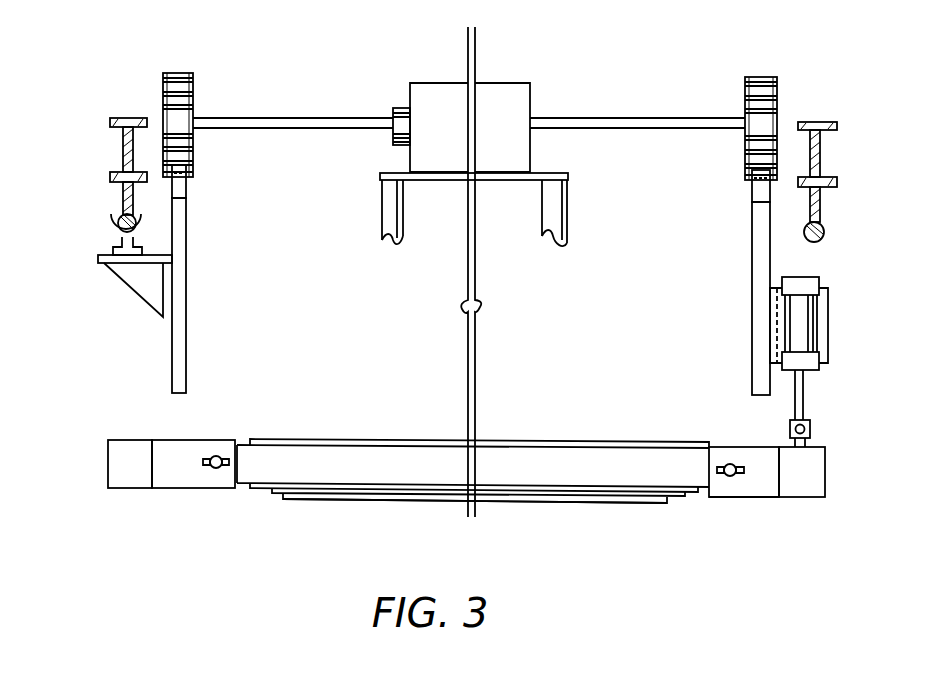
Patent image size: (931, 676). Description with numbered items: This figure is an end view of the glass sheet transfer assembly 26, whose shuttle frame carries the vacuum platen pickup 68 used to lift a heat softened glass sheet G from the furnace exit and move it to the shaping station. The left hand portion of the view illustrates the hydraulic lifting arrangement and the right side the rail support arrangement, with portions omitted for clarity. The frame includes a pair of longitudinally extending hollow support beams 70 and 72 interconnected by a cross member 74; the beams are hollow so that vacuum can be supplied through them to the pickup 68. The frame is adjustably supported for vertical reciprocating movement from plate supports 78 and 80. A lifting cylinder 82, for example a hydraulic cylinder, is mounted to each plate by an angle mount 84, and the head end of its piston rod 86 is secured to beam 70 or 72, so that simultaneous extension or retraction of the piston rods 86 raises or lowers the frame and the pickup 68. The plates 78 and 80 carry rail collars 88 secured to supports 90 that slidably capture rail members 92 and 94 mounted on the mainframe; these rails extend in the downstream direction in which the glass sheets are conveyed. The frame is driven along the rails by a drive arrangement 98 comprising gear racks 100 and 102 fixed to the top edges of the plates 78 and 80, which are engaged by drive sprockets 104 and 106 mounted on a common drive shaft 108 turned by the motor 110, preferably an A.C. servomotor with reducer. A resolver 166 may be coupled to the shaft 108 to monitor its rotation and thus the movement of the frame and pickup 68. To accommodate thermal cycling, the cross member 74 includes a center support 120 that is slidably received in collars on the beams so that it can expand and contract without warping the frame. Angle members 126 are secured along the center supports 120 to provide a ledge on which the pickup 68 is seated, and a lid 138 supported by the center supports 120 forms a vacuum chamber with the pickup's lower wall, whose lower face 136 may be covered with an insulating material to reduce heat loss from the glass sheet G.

The glass sheet transfer assembly 26 is at (604, 47).
The vacuum platen pickup 68 is at (667, 503).
The support beam 70 is at (825, 458).
The support beam 72 is at (108, 455).
The cross member 74 is at (762, 498).
The plate support 78 is at (752, 273).
The plate support 80 is at (186, 240).
The lifting cylinder 82 is at (808, 277).
The angle mount 84 is at (828, 310).
The piston rod 86 is at (803, 385).
The rail collar 88 is at (111, 233).
The support 90 is at (118, 277).
The rail member 92 is at (820, 200).
The rail member 94 is at (122, 193).
The drive arrangement 98 is at (440, 83).
The gear rack 100 is at (752, 195).
The gear rack 102 is at (187, 182).
The drive sprocket 104 is at (745, 95).
The drive sprocket 106 is at (193, 85).
The drive shaft 108 is at (575, 118).
The motor 110 is at (500, 83).
The center support 120 is at (328, 440).
The angle member 126 is at (685, 500).
The lower face 136 is at (342, 500).
The lid 138 is at (543, 442).
The resolver 166 is at (393, 113).
The glass sheet G is at (537, 503).